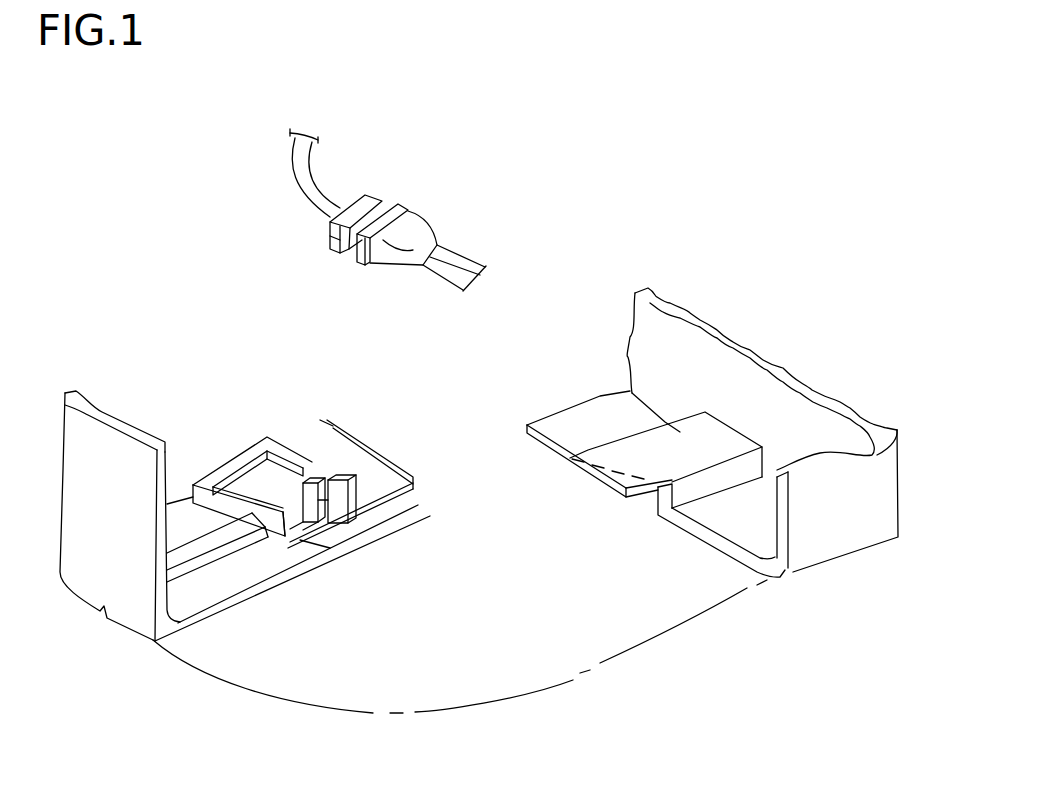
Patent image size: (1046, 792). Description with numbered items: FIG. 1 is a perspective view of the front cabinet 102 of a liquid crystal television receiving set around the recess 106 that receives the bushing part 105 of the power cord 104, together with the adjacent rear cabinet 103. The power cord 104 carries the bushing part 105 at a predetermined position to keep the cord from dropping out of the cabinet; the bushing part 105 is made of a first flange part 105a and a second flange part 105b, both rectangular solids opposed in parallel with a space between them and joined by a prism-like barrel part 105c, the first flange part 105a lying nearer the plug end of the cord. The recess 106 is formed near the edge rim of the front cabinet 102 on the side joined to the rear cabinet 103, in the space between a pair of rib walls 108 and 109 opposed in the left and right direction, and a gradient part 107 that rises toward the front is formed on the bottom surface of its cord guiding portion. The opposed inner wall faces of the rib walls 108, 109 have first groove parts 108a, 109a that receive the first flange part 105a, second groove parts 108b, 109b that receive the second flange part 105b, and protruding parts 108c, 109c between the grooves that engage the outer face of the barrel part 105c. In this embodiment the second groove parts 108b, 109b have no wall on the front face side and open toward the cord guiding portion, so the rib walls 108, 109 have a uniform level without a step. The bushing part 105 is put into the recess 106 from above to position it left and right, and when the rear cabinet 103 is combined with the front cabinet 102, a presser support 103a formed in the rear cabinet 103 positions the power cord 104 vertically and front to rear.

The front cabinet 102 is at (115, 580).
The rear cabinet 103 is at (698, 352).
The presser support 103a is at (645, 443).
The power cord 104 is at (293, 171).
The bushing part 105 is at (370, 192).
The first flange part 105a is at (378, 208).
The second flange part 105b is at (357, 207).
The barrel part 105c is at (328, 226).
The recess 106 is at (244, 432).
The gradient part 107 is at (260, 483).
The rib wall 108 is at (268, 532).
The first groove part 108a is at (283, 530).
The second groove part 108b is at (260, 500).
The protruding part 108c is at (312, 530).
The rib wall 109 is at (395, 447).
The first groove part 109a is at (347, 475).
The second groove part 109b is at (300, 470).
The protruding part 109c is at (307, 477).